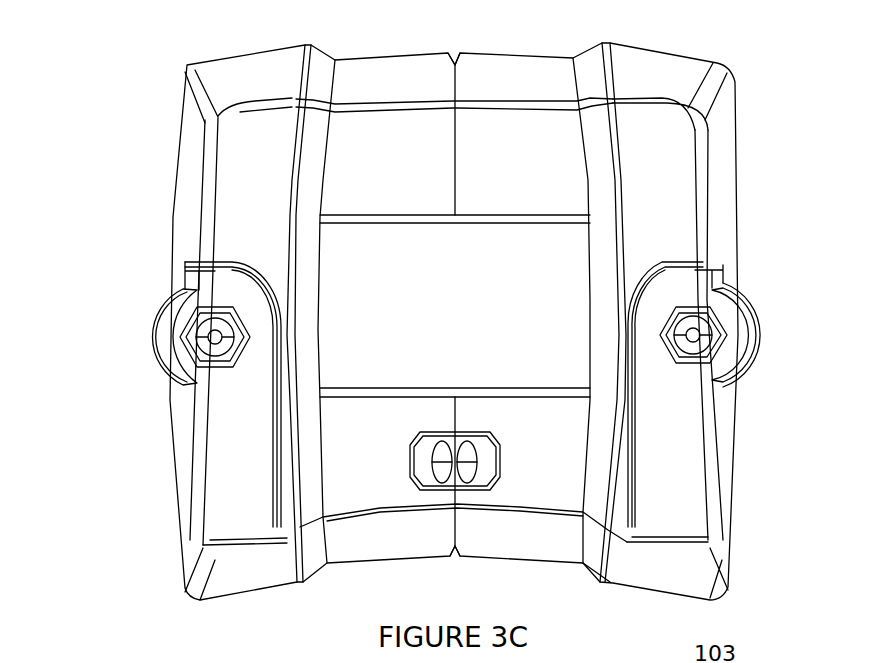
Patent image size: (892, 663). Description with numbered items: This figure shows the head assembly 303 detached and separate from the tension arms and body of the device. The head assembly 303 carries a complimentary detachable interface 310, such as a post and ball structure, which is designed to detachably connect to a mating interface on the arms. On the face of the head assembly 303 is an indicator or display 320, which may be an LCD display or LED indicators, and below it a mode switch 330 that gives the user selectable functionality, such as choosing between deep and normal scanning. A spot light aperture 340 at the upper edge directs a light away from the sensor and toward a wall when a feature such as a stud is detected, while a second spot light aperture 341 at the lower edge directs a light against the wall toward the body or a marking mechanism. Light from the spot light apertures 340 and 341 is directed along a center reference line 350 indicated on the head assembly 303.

The head assembly 303 is at (118, 335).
The complimentary detachable interface 310 is at (700, 335).
The indicator or display 320 is at (436, 307).
The mode switch 330 is at (460, 422).
The spot light aperture 340 is at (458, 36).
The second spot light aperture 341 is at (446, 577).
The center reference line 350 is at (457, 173).